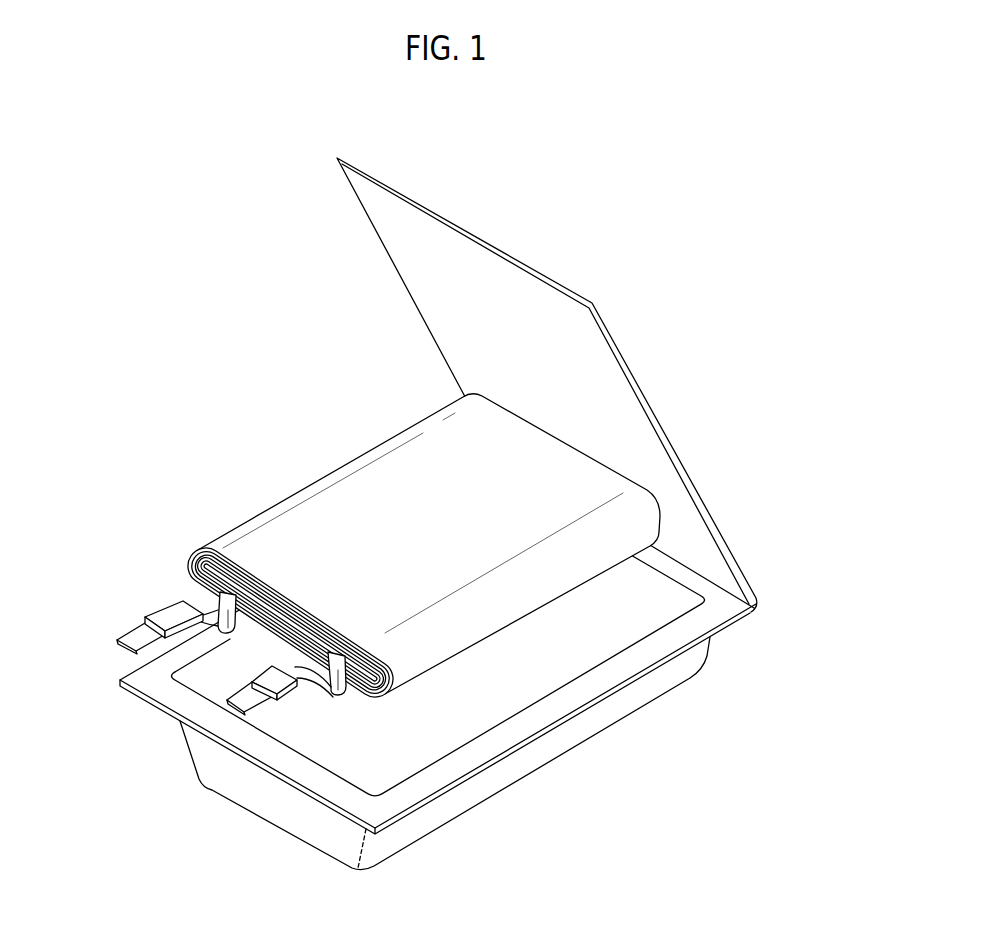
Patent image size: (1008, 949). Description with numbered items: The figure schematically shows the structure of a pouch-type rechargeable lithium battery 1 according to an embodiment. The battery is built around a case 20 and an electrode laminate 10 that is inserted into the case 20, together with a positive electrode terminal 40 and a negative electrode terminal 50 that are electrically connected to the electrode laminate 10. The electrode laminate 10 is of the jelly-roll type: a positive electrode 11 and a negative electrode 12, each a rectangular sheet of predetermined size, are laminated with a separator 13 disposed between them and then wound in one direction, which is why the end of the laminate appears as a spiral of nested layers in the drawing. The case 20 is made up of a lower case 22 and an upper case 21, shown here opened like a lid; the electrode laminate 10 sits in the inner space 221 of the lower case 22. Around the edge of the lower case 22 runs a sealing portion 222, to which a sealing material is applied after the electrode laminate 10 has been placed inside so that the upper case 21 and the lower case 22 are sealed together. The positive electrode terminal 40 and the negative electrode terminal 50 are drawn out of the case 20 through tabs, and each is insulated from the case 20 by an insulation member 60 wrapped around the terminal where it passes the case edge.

The rechargeable lithium battery 1 is at (223, 213).
The electrode laminate 10 is at (392, 544).
The positive electrode 11 is at (194, 550).
The negative electrode 12 is at (190, 577).
The separator 13 is at (190, 558).
The case 20 is at (805, 618).
The upper case 21 is at (722, 583).
The lower case 22 is at (460, 703).
The inner space 221 is at (477, 699).
The sealing portion 222 is at (632, 662).
The positive electrode terminal 40 is at (163, 671).
The negative electrode terminal 50 is at (340, 673).
The insulation member 60 is at (162, 617).